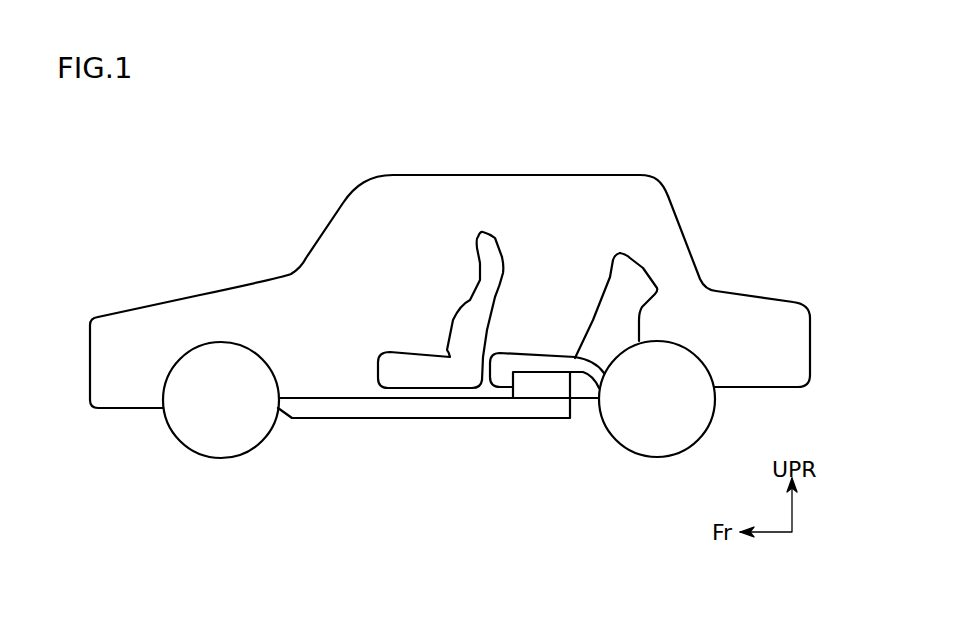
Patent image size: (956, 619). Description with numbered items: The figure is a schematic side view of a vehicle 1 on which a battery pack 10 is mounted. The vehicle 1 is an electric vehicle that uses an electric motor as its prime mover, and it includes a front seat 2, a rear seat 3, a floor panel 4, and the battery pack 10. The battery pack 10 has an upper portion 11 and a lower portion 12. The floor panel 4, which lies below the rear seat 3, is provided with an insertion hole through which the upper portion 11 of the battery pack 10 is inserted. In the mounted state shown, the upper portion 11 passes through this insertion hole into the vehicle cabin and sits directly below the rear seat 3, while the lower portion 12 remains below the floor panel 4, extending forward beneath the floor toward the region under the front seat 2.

The vehicle 1 is at (715, 192).
The front seat 2 is at (492, 232).
The rear seat 3 is at (620, 253).
The floor panel 4 is at (582, 400).
The battery pack 10 is at (424, 442).
The upper portion 11 is at (537, 385).
The lower portion 12 is at (502, 408).